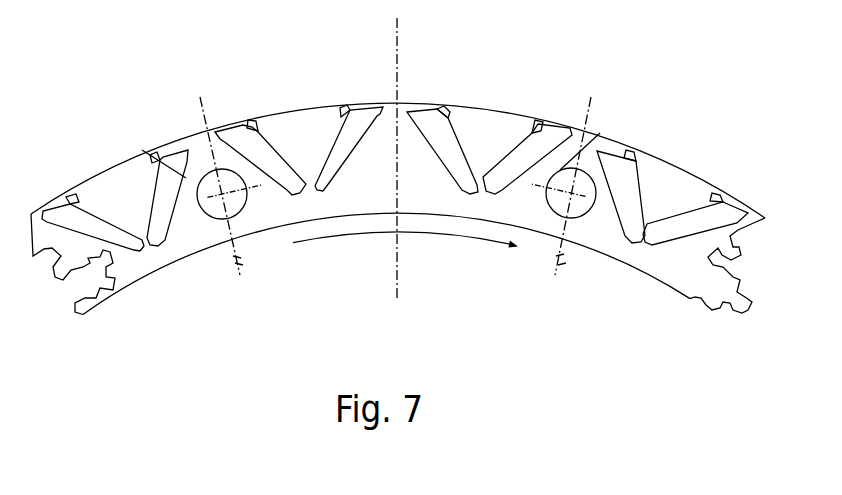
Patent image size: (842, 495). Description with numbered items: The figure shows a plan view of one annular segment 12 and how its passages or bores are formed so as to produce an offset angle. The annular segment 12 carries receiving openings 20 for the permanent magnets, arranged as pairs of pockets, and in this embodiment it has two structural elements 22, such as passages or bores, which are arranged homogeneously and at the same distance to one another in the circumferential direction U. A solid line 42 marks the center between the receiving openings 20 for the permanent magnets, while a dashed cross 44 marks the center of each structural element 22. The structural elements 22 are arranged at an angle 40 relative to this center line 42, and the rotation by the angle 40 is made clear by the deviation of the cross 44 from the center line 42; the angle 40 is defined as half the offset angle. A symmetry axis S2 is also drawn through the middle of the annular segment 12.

The annular segment 12 is at (675, 155).
The receiving openings for the permanent magnets 20 is at (133, 214).
The structural elements 22 is at (249, 207).
The offset angle 40 is at (230, 259).
The solid line 42 is at (200, 118).
The dashed cross 44 is at (142, 150).
The axis of symmetry S2 is at (399, 60).
The circumferential direction U is at (405, 269).